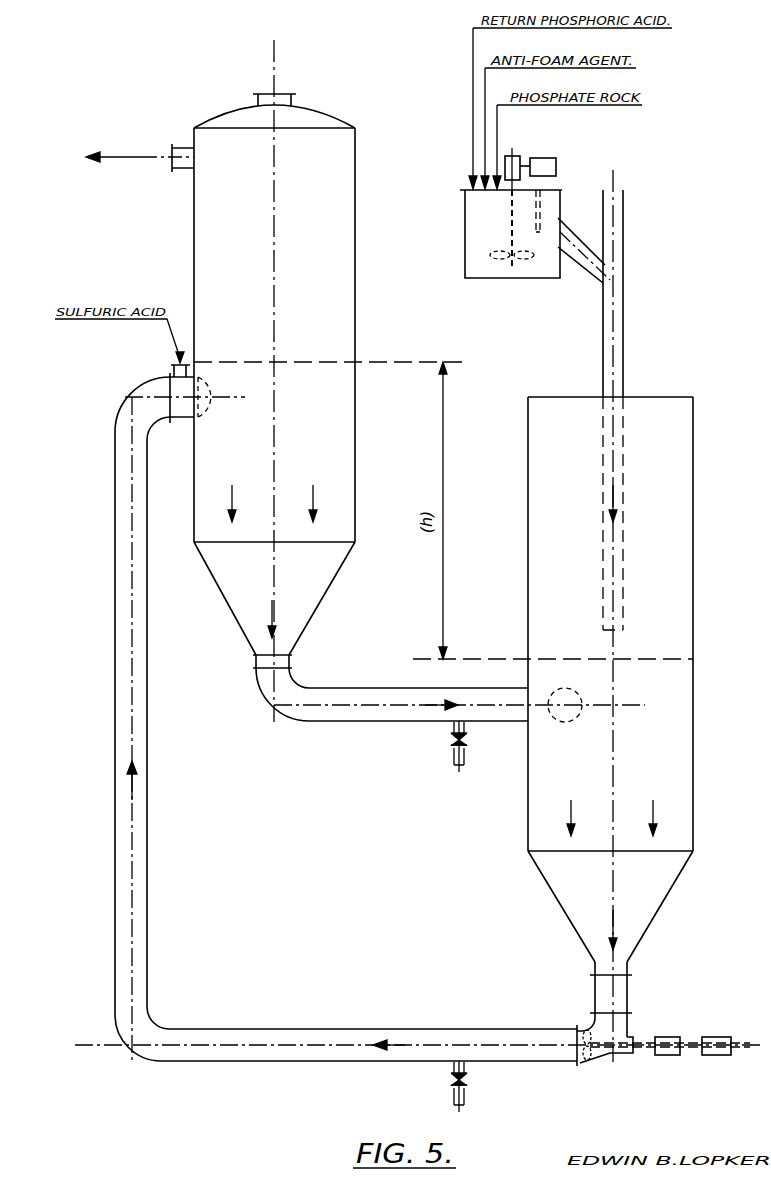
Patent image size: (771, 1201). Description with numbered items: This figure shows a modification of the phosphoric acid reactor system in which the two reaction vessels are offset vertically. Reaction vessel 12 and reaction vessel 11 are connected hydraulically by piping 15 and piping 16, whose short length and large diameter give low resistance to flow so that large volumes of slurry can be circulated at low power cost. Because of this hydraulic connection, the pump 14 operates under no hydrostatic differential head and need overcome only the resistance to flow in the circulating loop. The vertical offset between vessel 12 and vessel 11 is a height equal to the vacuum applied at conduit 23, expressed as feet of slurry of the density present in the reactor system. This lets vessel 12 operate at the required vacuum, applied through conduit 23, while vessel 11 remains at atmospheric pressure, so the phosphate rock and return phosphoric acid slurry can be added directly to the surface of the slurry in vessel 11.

The reaction vessel 12 is at (355, 258).
The conduit 23 is at (176, 146).
The piping 15 is at (349, 722).
The piping 16 is at (325, 1027).
The reaction vessel 11 is at (693, 563).
The pump 14 is at (598, 1062).